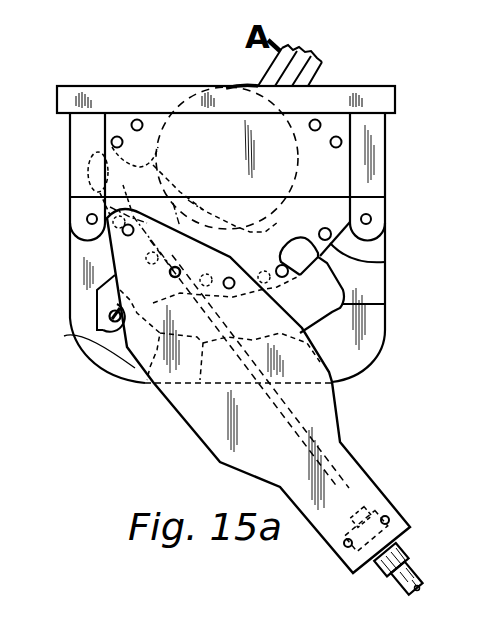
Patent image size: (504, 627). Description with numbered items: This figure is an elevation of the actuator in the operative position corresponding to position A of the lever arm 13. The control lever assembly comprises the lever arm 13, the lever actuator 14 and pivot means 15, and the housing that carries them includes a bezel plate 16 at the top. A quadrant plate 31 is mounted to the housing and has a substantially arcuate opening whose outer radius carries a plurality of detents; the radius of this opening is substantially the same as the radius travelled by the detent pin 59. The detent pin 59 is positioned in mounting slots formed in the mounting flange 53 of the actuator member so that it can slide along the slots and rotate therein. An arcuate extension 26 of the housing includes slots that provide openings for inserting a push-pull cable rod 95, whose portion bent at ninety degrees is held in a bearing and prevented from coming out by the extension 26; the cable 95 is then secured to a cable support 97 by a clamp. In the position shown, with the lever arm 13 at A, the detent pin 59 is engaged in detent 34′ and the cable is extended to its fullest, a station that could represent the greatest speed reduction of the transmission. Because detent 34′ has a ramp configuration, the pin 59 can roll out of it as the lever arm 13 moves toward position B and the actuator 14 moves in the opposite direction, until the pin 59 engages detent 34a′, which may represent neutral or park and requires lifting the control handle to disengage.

The lever arm 13 is at (322, 61).
The lever actuator 14 is at (88, 172).
The pivot means 15 is at (240, 85).
The bezel plate 16 is at (386, 98).
The arcuate extension 26 is at (385, 262).
The quadrant plate 31 is at (385, 338).
The detent 34′ is at (95, 375).
The detent 34a′ is at (359, 372).
The mounting flange 53 is at (97, 331).
The detent pin 59 is at (112, 307).
The push-pull cable rod 95 is at (414, 575).
The cable support 97 is at (350, 450).